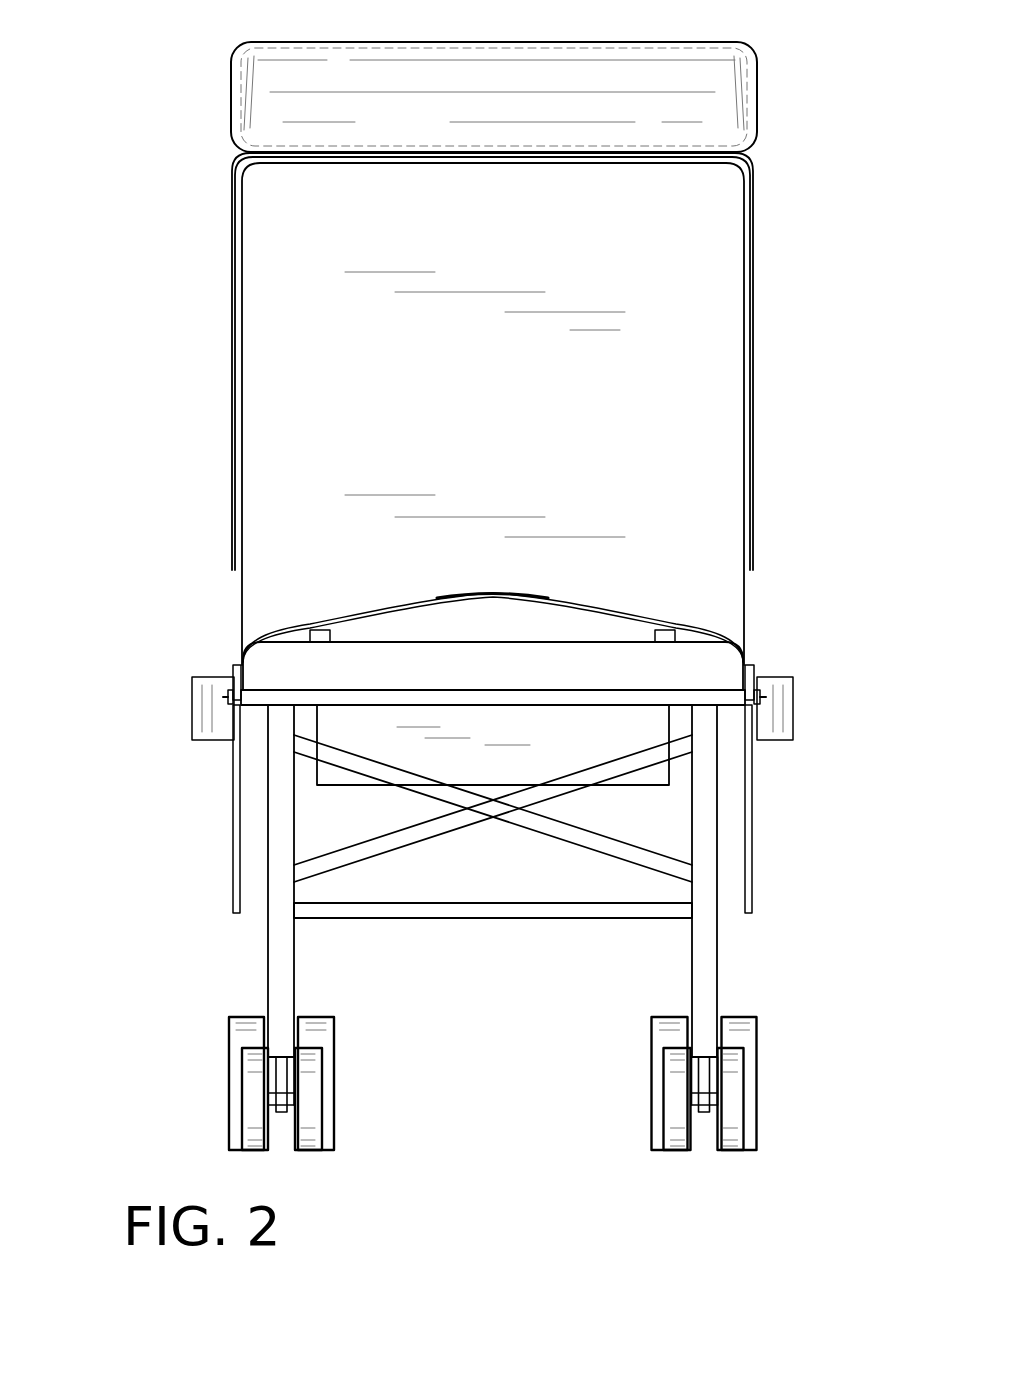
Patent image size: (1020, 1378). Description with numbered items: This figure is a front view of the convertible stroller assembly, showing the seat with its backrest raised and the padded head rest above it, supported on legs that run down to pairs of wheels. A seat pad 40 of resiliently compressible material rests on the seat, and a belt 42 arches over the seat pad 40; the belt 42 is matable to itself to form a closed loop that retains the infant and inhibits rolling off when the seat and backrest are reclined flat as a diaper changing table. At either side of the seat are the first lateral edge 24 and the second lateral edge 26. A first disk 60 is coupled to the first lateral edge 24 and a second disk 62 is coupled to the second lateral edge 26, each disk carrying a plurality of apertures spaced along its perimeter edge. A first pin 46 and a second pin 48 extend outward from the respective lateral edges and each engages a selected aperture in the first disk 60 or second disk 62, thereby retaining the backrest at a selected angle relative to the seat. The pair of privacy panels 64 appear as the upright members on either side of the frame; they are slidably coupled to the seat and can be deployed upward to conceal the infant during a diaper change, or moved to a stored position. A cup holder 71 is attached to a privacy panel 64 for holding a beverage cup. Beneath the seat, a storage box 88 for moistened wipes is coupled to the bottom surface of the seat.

The first lateral edge 24 is at (262, 705).
The second lateral edge 26 is at (761, 698).
The seat pad 40 is at (276, 645).
The belt 42 is at (590, 608).
The first pin 46 is at (232, 675).
The second pin 48 is at (758, 672).
The first disk 60 is at (236, 662).
The second disk 62 is at (751, 662).
The privacy panels 64 is at (236, 868).
The cup holder 71 is at (191, 703).
The storage box 88 is at (355, 787).